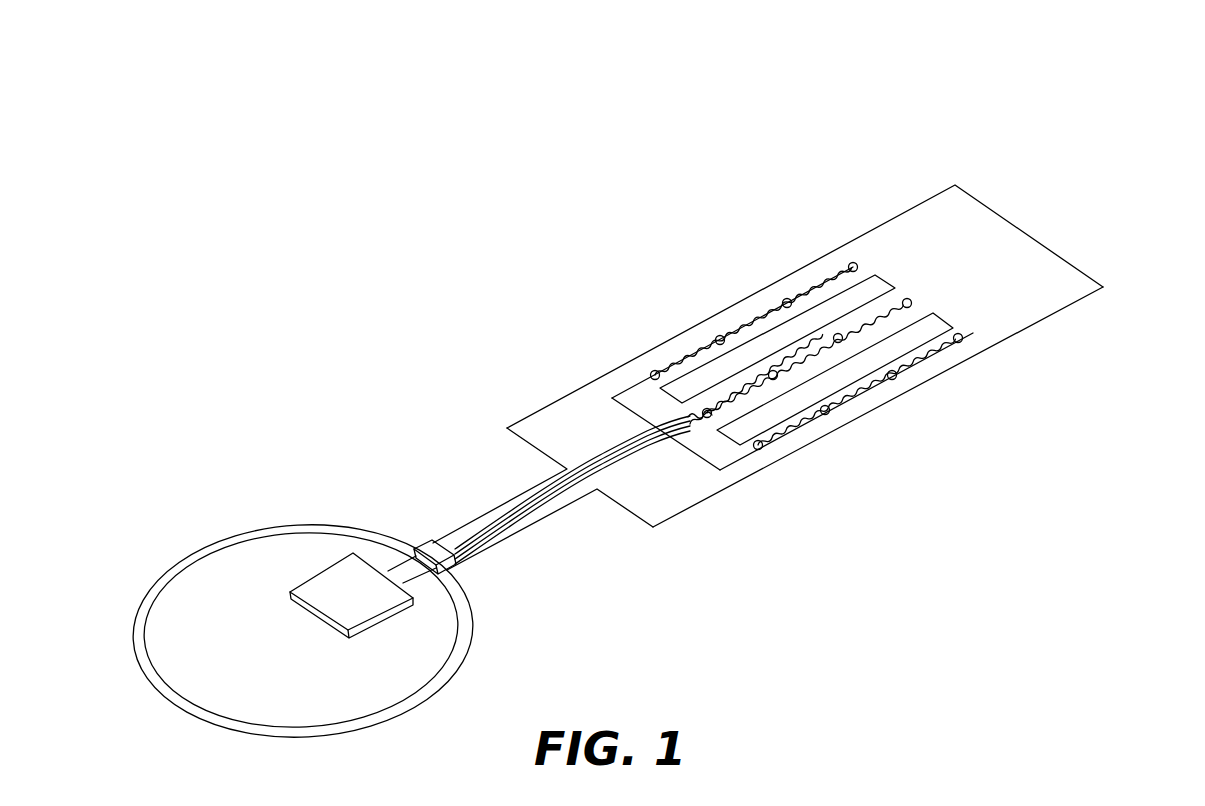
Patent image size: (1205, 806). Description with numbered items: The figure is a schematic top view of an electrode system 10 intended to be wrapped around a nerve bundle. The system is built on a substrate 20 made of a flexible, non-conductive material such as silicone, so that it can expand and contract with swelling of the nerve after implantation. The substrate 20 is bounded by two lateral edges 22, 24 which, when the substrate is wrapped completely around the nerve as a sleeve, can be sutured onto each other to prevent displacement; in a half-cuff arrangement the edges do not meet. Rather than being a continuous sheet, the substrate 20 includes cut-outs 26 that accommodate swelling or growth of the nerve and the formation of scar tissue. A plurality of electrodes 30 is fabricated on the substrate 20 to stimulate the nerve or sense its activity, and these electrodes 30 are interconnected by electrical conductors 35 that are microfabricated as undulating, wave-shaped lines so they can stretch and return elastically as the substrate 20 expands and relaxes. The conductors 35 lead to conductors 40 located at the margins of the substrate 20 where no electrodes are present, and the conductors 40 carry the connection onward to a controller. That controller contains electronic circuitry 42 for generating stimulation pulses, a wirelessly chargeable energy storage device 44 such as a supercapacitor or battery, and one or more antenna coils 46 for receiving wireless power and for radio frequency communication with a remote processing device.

The electrode system 10 is at (940, 108).
The substrate 20 is at (1002, 213).
The lateral edge 22 is at (645, 523).
The lateral edge 24 is at (1100, 278).
The cut-outs 26 is at (888, 276).
The electrodes 30 is at (962, 340).
The electrical conductors 35 is at (697, 354).
The conductors 40 is at (513, 519).
The electronic circuitry 42 is at (428, 544).
The energy storage device 44 is at (322, 617).
The antenna coils 46 is at (135, 654).